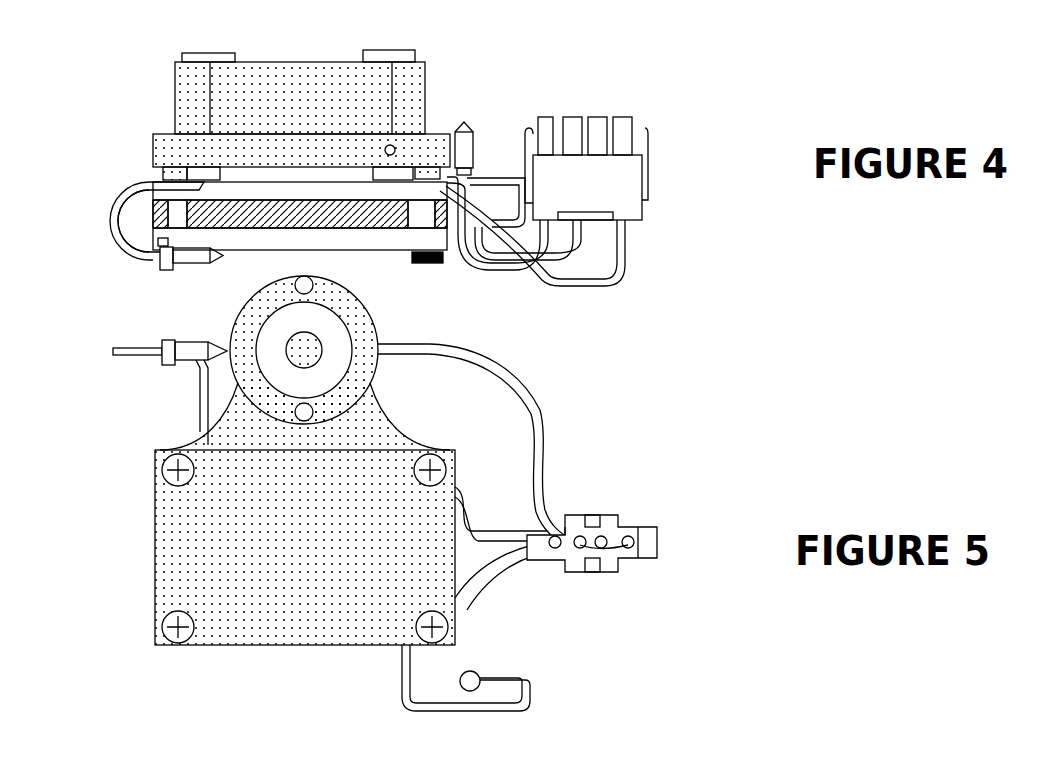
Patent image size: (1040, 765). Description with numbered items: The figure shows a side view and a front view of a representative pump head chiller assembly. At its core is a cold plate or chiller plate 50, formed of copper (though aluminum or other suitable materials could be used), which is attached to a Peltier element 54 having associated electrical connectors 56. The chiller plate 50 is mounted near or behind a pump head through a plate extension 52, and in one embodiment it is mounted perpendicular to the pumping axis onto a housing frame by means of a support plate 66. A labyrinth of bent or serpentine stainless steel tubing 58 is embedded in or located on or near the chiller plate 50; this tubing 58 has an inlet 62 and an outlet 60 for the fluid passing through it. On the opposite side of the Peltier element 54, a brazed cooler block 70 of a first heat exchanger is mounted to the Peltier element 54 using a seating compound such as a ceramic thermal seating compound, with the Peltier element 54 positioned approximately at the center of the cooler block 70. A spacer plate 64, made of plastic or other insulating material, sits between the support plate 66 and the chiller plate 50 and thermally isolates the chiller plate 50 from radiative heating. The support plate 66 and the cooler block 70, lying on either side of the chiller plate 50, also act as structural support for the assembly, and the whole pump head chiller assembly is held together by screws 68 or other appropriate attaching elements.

In FIG. 4, the chiller plate 50 is at (158, 220).
In FIG. 5, the plate extension 52 is at (365, 298).
In FIG. 4, the Peltier element 54 is at (163, 173).
In FIG. 4, the electrical connectors 56 is at (645, 190).
In FIG. 5, the electrical connectors 56 is at (636, 516).
In FIG. 4, the tubing 58 is at (118, 190).
In FIG. 4, the outlet 60 is at (190, 265).
In FIG. 4, the inlet 62 is at (473, 140).
In FIG. 5, the inlet 62 is at (532, 705).
In FIG. 4, the spacer plate 64 is at (150, 197).
In FIG. 4, the support plate 66 is at (153, 240).
In FIG. 5, the support plate 66 is at (160, 512).
In FIG. 4, the screws 68 is at (445, 263).
In FIG. 5, the screws 68 is at (178, 643).
In FIG. 4, the cooler block 70 is at (427, 75).